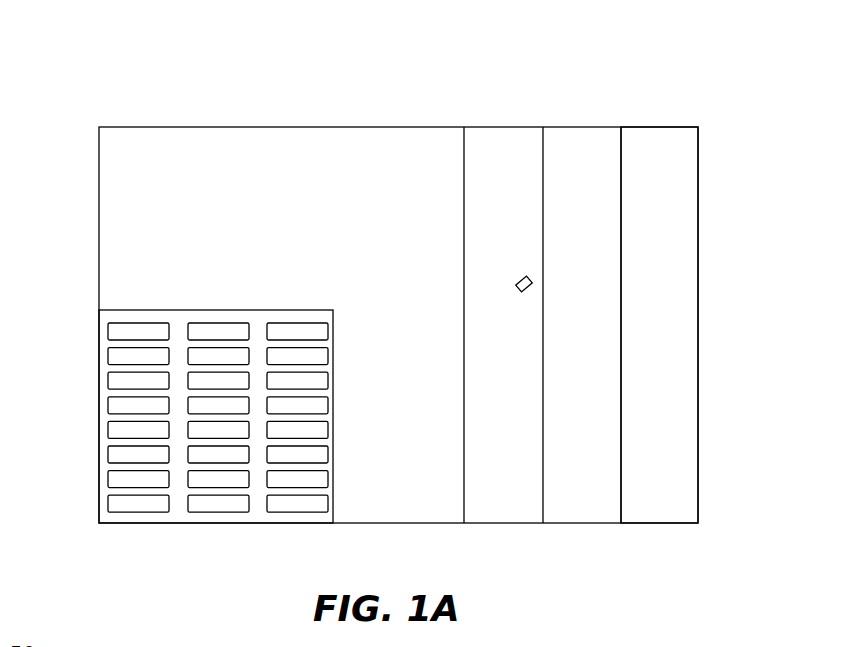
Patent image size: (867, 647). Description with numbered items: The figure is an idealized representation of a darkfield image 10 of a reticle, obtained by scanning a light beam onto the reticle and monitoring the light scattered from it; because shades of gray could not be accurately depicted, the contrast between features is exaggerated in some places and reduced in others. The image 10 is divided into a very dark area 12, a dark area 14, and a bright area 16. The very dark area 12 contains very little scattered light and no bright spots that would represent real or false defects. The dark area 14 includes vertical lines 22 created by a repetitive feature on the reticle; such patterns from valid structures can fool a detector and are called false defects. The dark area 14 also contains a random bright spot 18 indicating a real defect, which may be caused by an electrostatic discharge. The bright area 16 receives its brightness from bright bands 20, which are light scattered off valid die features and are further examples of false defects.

The darkfield image 10 is at (112, 96).
The very dark area 12 is at (307, 147).
The dark area 14 is at (515, 143).
The bright area 16 is at (255, 510).
The random bright spot 18 is at (531, 289).
The bright bands 20 is at (135, 508).
The vertical lines 22 is at (623, 437).